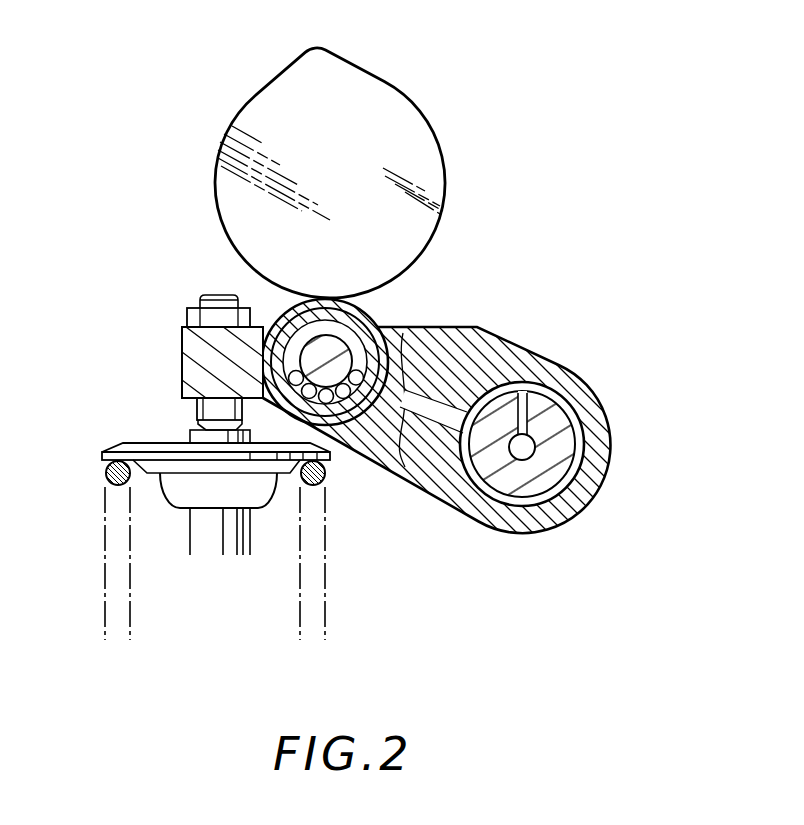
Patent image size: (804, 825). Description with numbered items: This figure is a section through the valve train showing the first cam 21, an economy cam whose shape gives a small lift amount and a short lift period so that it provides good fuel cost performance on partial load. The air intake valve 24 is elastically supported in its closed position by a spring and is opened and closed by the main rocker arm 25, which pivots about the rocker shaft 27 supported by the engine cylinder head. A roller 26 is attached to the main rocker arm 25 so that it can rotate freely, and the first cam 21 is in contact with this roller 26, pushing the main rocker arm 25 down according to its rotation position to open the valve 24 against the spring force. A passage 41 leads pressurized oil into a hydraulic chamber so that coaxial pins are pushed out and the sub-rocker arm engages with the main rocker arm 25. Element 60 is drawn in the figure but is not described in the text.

The first cam 21 is at (392, 95).
The air intake valve 24 is at (223, 533).
The main rocker arm 25 is at (172, 360).
The roller 26 is at (348, 318).
The rocker shaft 27 is at (535, 502).
The passage 41 is at (448, 417).
The seal ring 60 is at (108, 472).